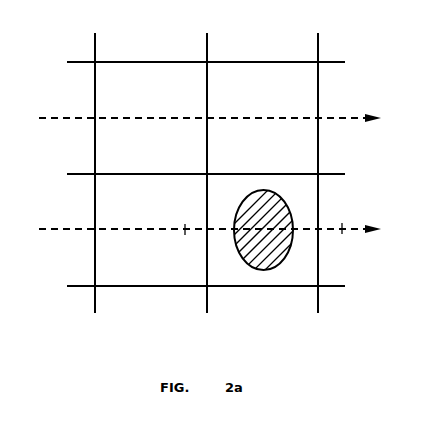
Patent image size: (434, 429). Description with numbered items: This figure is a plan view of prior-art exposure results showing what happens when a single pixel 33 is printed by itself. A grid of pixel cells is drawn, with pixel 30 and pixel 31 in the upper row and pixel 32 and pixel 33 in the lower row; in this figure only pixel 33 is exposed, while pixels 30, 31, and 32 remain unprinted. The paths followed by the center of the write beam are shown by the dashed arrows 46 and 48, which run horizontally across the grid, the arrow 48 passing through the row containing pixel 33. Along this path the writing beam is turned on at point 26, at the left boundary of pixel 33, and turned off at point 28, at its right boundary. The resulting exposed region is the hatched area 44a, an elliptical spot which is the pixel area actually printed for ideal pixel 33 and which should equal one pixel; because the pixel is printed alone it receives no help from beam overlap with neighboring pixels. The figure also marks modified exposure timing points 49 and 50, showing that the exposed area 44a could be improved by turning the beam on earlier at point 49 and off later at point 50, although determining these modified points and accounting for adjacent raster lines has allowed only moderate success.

The pixel 30 is at (143, 71).
The pixel 31 is at (250, 75).
The pixel 32 is at (140, 277).
The pixel 33 is at (302, 273).
The dashed arrow 46 is at (75, 117).
The dashed arrow 48 is at (78, 230).
The beam turn-on point 26 is at (205, 230).
The modified beam turn-on point 49 is at (185, 234).
The hatched area 44a is at (280, 213).
The modified beam turn-off point 50 is at (342, 223).
The beam turn-off point 28 is at (318, 229).